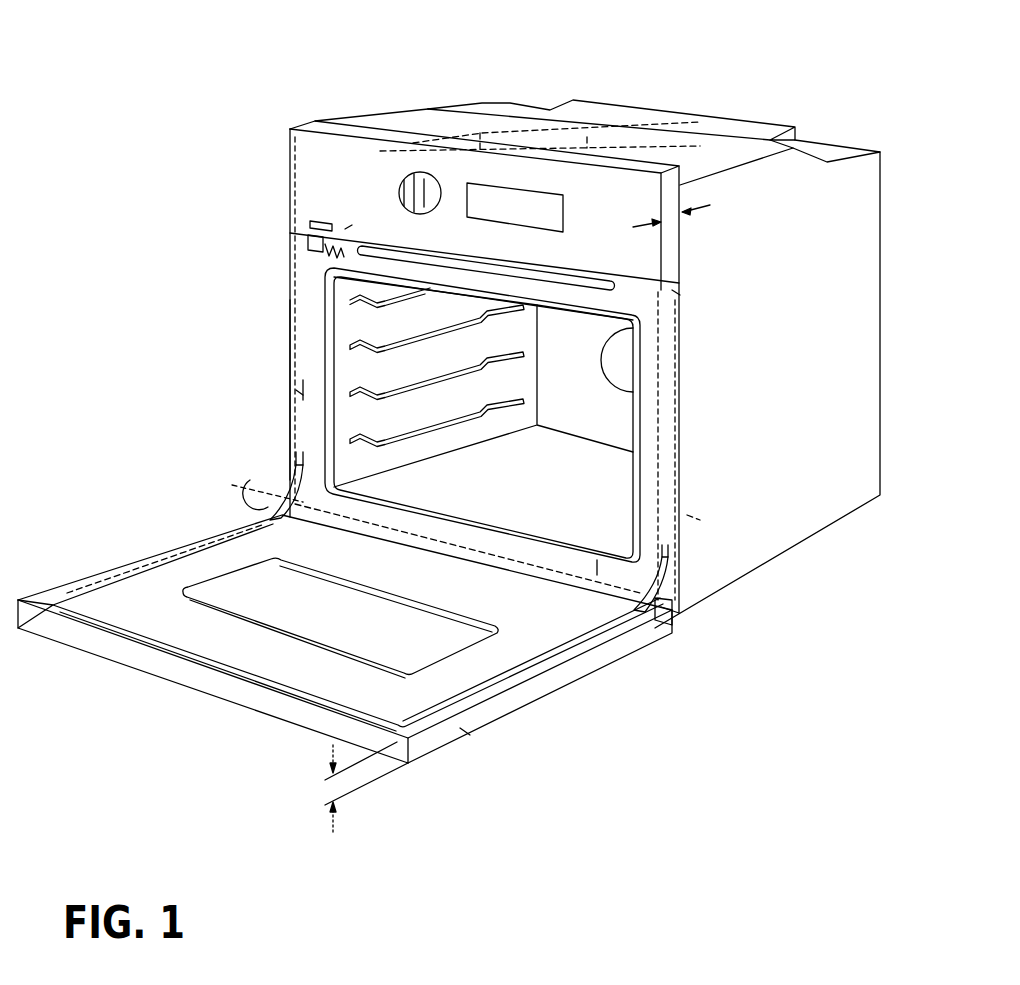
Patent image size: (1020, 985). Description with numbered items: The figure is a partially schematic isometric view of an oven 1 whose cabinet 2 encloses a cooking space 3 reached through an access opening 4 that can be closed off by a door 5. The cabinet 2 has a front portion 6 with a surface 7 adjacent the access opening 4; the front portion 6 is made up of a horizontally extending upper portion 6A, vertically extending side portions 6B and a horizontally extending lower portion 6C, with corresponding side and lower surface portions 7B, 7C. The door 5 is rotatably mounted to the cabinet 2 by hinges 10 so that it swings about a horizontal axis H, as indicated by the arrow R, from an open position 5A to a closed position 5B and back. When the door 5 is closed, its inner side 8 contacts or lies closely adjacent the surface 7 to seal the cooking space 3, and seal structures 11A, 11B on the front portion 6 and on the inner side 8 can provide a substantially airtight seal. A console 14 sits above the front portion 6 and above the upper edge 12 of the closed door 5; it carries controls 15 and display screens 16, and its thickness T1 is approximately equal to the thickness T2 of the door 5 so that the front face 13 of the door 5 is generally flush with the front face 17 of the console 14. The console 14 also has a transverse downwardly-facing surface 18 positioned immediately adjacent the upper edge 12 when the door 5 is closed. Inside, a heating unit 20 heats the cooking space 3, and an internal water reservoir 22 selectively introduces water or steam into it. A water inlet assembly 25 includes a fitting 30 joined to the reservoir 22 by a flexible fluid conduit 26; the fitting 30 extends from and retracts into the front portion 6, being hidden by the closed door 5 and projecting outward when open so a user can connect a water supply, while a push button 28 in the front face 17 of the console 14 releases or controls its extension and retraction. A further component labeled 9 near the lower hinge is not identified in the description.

The oven 1 is at (726, 112).
The cabinet 2 is at (793, 485).
The cooking space 3 is at (395, 361).
The access opening 4 is at (358, 414).
The door 5 is at (497, 705).
The open position 5A is at (428, 755).
The closed position 5B is at (687, 515).
The front portion 6 is at (295, 270).
The upper portion 6A is at (680, 295).
The side portions 6B is at (303, 393).
The lower portion 6C is at (345, 505).
The surface 7 is at (295, 285).
The side surface portions 7B is at (302, 388).
The lower surface portion 7C is at (597, 568).
The inner side 8 is at (212, 665).
The hinge receptacle 9 is at (622, 602).
The hinges 10 is at (293, 483).
The seal structure 11A is at (290, 293).
The seal structure 11B is at (177, 557).
The upper edge 12 is at (97, 643).
The front face 13 is at (468, 732).
The console 14 is at (323, 193).
The controls 15 is at (447, 190).
The display screens 16 is at (498, 193).
The front face 17 is at (289, 128).
The transverse downwardly-facing surface 18 is at (680, 288).
The heating unit 20 is at (670, 126).
The internal water reservoir 22 is at (538, 103).
The water inlet assembly 25 is at (305, 242).
The fluid conduit 26 is at (345, 229).
The push button 28 is at (310, 226).
The fitting 30 is at (325, 255).
The horizontal axis H is at (266, 472).
The arrow R is at (222, 488).
The console thickness T1 is at (687, 209).
The door thickness T2 is at (332, 803).